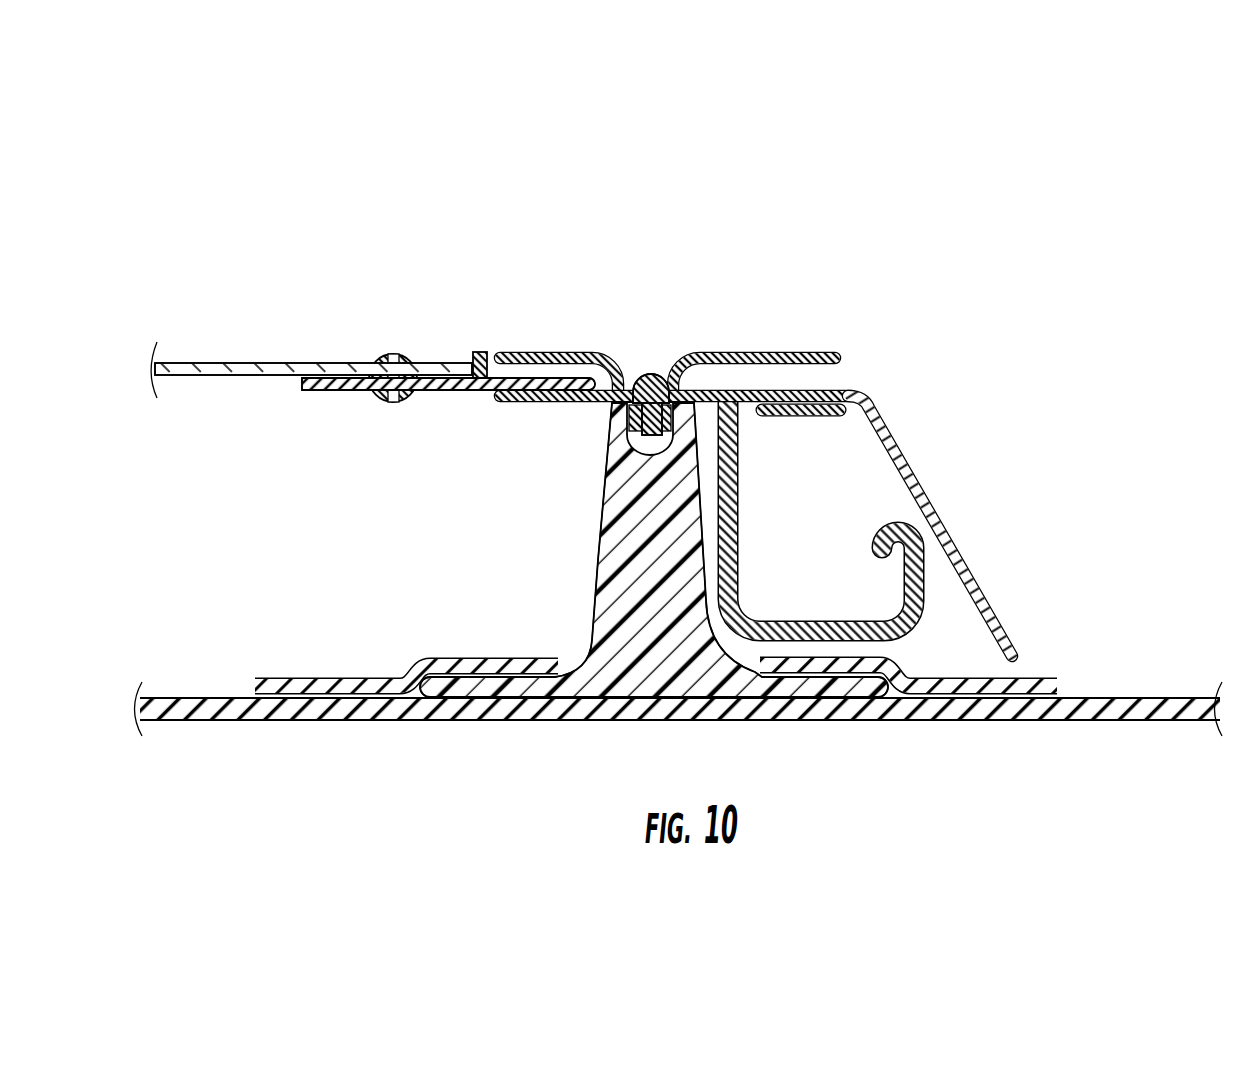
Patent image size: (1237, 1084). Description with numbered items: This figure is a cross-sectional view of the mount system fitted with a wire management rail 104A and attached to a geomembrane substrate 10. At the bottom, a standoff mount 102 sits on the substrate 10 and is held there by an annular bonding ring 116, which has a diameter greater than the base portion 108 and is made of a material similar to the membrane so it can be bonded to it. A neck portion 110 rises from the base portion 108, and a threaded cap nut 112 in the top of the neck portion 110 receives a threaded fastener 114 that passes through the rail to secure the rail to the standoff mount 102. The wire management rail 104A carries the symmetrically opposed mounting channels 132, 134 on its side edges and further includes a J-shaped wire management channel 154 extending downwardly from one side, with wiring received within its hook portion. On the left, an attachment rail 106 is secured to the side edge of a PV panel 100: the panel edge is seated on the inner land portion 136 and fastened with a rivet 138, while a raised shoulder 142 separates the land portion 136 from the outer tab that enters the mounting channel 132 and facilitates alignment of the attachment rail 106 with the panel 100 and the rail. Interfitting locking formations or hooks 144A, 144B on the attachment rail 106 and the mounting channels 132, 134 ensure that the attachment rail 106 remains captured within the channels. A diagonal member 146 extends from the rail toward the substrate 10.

The substrate 10 is at (1130, 698).
The PV panel 100 is at (268, 362).
The standoff mount 102 is at (649, 608).
The wire management rail 104A is at (530, 352).
The attachment rail 106 is at (396, 442).
The base portion 108 is at (575, 685).
The neck portion 110 is at (649, 608).
The threaded cap nut 112 is at (625, 412).
The threaded fastener 114 is at (607, 352).
The annular bonding ring 116 is at (322, 677).
The mounting channel 132 is at (753, 417).
The mounting channel 134 is at (773, 352).
The inner land portion 136 is at (307, 390).
The rivet 138 is at (393, 354).
The raised shoulder 142 is at (480, 352).
The locking formation 144A is at (650, 372).
The locking formation 144B is at (503, 352).
The brace 146 is at (932, 504).
The J-shaped wire management channel 154 is at (905, 590).